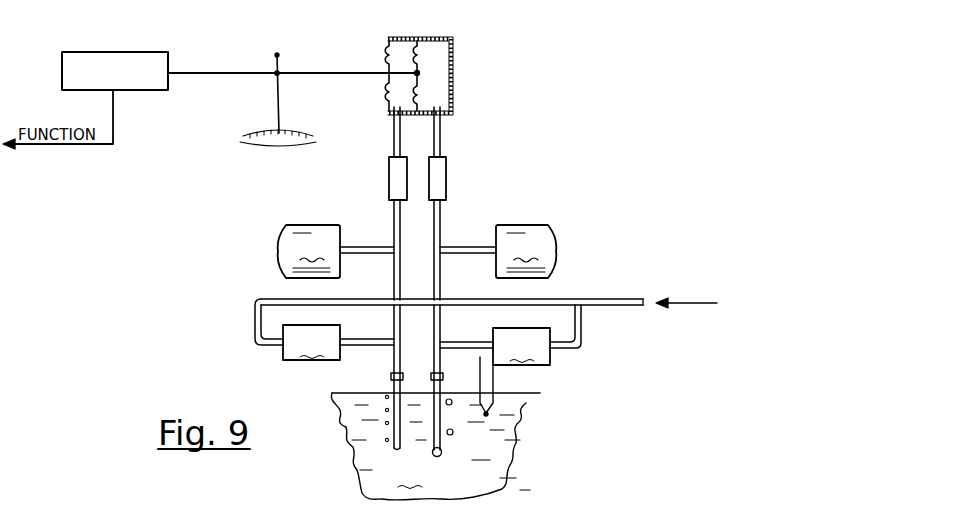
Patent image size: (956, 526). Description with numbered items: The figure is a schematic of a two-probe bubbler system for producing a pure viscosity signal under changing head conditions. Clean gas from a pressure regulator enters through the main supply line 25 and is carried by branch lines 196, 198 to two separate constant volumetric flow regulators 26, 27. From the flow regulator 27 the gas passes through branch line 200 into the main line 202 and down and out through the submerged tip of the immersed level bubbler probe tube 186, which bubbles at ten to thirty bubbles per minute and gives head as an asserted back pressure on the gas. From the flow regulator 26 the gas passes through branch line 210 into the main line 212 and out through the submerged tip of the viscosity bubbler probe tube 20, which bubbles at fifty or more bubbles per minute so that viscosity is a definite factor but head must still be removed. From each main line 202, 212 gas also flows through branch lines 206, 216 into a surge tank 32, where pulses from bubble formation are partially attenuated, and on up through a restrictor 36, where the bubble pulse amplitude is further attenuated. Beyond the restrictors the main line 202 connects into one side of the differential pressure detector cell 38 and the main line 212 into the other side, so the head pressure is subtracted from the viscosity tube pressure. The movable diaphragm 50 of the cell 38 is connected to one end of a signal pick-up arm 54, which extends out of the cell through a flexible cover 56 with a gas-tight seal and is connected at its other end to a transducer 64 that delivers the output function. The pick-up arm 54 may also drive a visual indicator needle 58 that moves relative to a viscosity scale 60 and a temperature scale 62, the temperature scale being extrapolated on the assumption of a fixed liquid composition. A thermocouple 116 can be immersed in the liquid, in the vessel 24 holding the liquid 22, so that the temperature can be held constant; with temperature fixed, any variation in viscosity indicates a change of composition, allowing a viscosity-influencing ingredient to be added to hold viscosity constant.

The transducer 64 is at (130, 52).
The signal pick-up arm 54 is at (222, 73).
The visual indicator needle 58 is at (283, 101).
The viscosity scale 60 is at (242, 132).
The temperature scale 62 is at (240, 139).
The differential pressure detector cell 38 is at (454, 38).
The movable diaphragm 50 is at (417, 62).
The flexible cover 56 is at (387, 59).
The main line 202 is at (441, 136).
The main line 212 is at (393, 278).
The restrictor 36 is at (389, 172).
The surge tank 32 is at (417, 251).
The branch line 216 is at (369, 247).
The branch line 206 is at (452, 248).
The main supply line 25 is at (618, 300).
The branch line 196 is at (255, 311).
The branch line 198 is at (581, 330).
The constant volumetric flow regulator 26 is at (311, 342).
The constant volumetric flow regulator 27 is at (521, 346).
The branch line 210 is at (363, 349).
The branch line 200 is at (453, 342).
The vessel 24 is at (523, 393).
The liquid 22 is at (441, 447).
The thermocouple 116 is at (487, 410).
The level bubbler probe tube 186 is at (438, 437).
The viscosity bubbler probe tube 20 is at (392, 428).